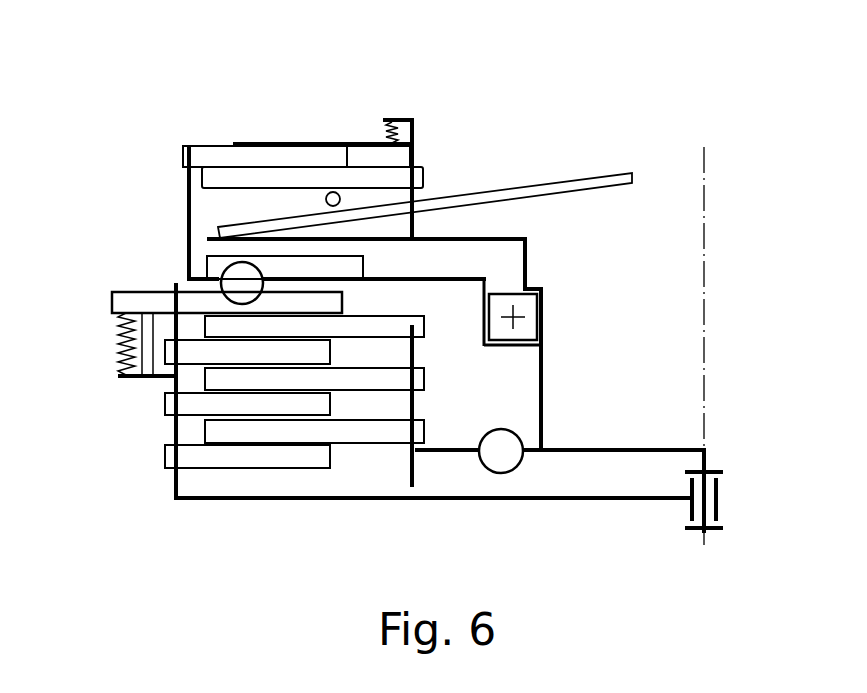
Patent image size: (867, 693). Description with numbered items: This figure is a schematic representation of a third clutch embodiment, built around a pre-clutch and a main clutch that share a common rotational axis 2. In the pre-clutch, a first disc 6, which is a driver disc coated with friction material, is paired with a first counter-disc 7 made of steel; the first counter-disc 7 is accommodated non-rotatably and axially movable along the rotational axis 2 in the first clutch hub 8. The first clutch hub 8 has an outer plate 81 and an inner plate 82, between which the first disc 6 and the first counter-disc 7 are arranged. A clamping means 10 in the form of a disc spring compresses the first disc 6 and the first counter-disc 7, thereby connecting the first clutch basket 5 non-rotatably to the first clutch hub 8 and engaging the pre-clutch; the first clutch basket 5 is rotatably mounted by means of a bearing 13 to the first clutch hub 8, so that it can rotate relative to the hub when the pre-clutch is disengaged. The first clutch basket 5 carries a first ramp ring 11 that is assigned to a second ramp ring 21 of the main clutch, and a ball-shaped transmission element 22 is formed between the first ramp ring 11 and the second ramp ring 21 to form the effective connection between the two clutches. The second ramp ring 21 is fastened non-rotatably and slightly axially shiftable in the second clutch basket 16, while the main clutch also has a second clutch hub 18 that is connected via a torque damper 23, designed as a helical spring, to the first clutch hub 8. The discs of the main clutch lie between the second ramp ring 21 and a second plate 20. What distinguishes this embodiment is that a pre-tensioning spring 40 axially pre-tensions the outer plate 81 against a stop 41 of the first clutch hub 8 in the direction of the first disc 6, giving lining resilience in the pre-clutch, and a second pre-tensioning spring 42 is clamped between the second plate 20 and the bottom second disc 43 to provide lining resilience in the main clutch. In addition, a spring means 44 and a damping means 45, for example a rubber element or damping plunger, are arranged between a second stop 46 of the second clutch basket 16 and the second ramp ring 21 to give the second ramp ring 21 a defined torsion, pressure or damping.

The rotational axis 2 is at (706, 280).
The first clutch basket 5 is at (188, 180).
The first disc 6 is at (225, 152).
The first counter-disc 7 is at (187, 190).
The first clutch hub 8 is at (416, 158).
The clamping means 10 is at (618, 173).
The first ramp ring 11 is at (200, 275).
The bearing 13 is at (522, 335).
The second clutch basket 16 is at (175, 487).
The second clutch hub 18 is at (417, 357).
The second plate 20 is at (430, 500).
The second ramp ring 21 is at (130, 292).
The transmission element 22 is at (242, 282).
The torque damper 23 is at (500, 457).
The pre-tensioning spring 40 is at (392, 125).
The stop 41 is at (410, 118).
The second pre-tensioning spring 42 is at (237, 487).
The bottom second disc 43 is at (302, 462).
The spring means 44 is at (118, 350).
The damping means 45 is at (142, 376).
The second stop 46 is at (165, 392).
The outer plate 81 is at (275, 142).
The inner plate 82 is at (423, 238).